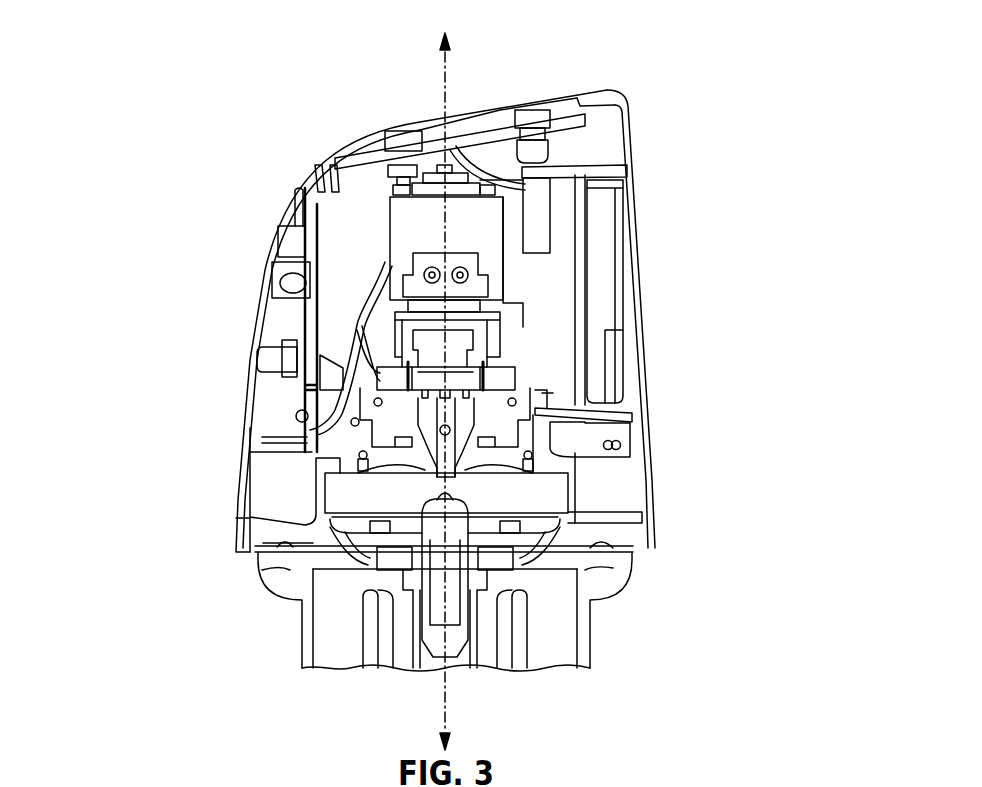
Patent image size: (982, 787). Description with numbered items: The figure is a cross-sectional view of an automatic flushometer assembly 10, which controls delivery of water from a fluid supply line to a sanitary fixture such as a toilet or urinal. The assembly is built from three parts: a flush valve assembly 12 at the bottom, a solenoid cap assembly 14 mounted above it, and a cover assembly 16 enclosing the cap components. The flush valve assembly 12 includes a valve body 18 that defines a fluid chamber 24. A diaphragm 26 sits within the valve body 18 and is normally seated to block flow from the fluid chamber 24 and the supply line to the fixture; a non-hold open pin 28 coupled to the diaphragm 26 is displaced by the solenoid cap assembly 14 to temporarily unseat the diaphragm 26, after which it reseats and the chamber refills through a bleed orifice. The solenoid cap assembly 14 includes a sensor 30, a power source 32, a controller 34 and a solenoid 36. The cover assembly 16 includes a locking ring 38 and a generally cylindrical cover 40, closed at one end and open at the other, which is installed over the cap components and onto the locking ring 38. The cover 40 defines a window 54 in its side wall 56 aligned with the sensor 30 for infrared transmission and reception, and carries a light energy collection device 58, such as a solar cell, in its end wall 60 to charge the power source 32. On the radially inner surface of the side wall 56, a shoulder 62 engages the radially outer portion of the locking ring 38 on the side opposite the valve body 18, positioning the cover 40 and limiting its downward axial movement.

The automatic flushometer assembly 10 is at (160, 122).
The flush valve assembly 12 is at (281, 631).
The solenoid cap assembly 14 is at (362, 200).
The cover assembly 16 is at (651, 258).
The valve body 18 is at (266, 570).
The fluid chamber 24 is at (545, 496).
The diaphragm 26 is at (530, 555).
The non-hold open pin 28 is at (450, 605).
The sensor 30 is at (262, 362).
The power source 32 is at (590, 348).
The controller 34 is at (278, 325).
The solenoid 36 is at (398, 220).
The locking ring 38 is at (250, 514).
The cover 40 is at (249, 460).
The window 54 is at (263, 258).
The side wall 56 is at (634, 138).
The light energy collection device 58 is at (404, 128).
The end wall 60 is at (592, 94).
The shoulder 62 is at (600, 526).